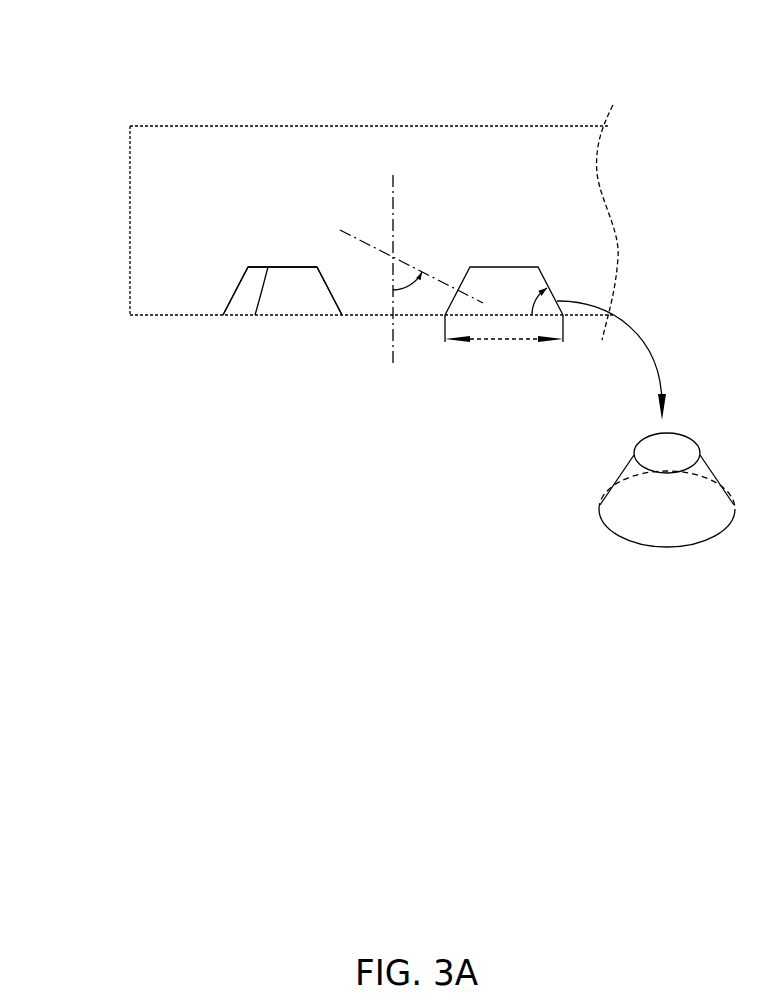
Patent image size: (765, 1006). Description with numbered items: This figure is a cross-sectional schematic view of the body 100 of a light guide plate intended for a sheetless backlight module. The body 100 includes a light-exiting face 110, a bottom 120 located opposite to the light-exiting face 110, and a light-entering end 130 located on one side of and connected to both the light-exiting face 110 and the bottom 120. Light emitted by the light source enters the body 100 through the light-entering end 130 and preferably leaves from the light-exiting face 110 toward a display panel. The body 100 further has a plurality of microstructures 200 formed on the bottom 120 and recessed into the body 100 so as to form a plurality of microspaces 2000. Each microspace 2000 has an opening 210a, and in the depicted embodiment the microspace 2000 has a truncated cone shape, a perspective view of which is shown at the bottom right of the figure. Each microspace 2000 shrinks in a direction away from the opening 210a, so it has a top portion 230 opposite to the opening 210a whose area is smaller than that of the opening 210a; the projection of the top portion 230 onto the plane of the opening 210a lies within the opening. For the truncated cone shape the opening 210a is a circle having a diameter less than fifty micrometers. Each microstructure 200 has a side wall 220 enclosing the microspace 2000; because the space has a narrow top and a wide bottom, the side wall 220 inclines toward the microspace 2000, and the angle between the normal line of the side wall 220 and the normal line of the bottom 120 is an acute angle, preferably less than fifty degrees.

The body 100 is at (97, 47).
The light-exiting face 110 is at (368, 126).
The bottom 120 is at (150, 317).
The light-entering end 130 is at (130, 213).
The microstructure 200 is at (237, 292).
The opening 210a is at (235, 340).
The microspace 2000 is at (280, 325).
The side wall 220 is at (337, 304).
The top portion 230 is at (255, 315).